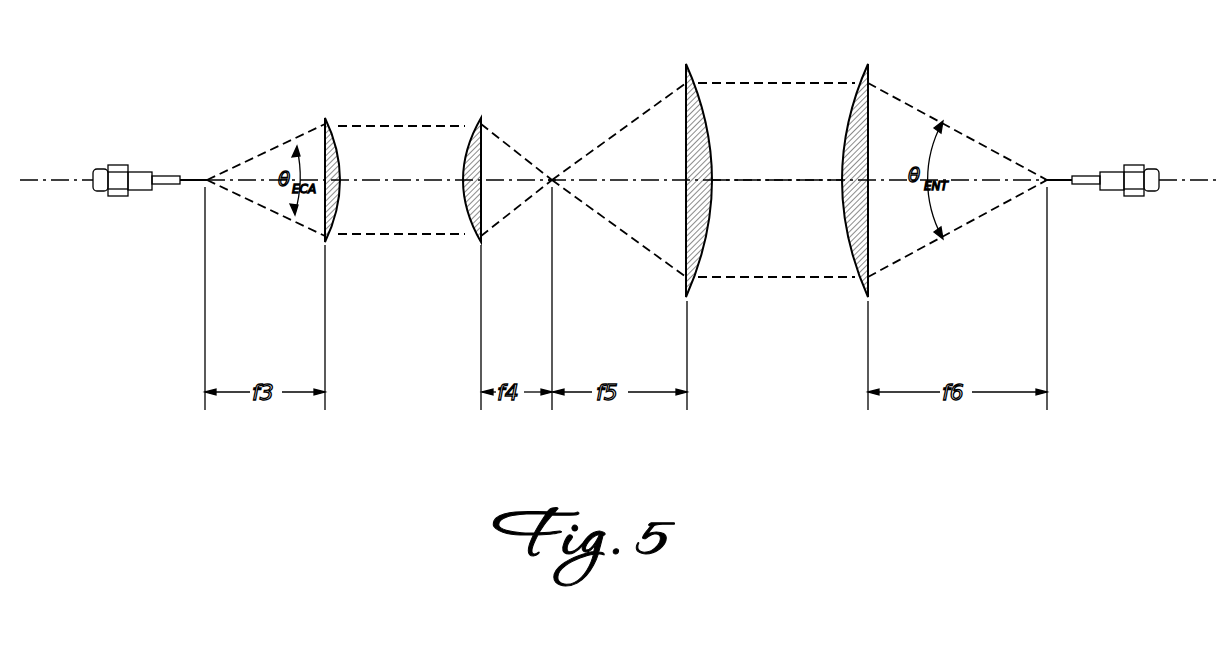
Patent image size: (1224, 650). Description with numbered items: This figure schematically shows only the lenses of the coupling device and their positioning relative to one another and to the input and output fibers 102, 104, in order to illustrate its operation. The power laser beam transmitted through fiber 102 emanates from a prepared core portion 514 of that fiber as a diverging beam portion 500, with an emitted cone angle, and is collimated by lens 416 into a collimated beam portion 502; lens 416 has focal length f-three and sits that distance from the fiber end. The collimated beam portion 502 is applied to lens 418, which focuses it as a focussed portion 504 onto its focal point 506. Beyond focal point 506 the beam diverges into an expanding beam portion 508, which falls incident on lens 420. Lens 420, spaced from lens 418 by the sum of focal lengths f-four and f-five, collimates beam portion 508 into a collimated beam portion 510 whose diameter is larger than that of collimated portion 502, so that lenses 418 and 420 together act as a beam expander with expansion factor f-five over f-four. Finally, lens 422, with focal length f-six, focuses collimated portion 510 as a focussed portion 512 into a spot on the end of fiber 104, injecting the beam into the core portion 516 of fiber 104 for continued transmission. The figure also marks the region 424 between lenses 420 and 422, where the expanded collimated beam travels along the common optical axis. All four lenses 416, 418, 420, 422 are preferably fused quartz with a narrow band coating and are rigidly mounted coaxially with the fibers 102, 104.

The fiber 102 is at (140, 166).
The fiber 104 is at (1113, 200).
The lens 416 is at (338, 147).
The lens 418 is at (482, 138).
The lens 420 is at (703, 110).
The lens 422 is at (870, 117).
The collimated beam region / optical axis 424 is at (757, 181).
The diverging beam portion 500 is at (300, 137).
The collimated beam portion 502 is at (412, 126).
The focussed portion 504 is at (512, 149).
The focal point 506 is at (553, 178).
The expanding beam portion 508 is at (652, 106).
The collimated beam portion 510 is at (802, 83).
The focussed portion 512 is at (970, 138).
The core portion 514 is at (192, 178).
The core portion 516 is at (1060, 178).